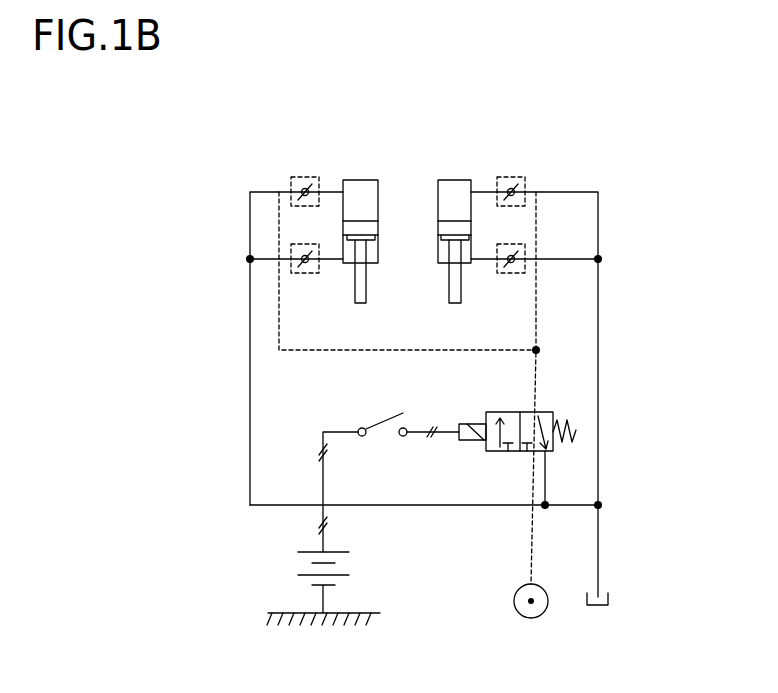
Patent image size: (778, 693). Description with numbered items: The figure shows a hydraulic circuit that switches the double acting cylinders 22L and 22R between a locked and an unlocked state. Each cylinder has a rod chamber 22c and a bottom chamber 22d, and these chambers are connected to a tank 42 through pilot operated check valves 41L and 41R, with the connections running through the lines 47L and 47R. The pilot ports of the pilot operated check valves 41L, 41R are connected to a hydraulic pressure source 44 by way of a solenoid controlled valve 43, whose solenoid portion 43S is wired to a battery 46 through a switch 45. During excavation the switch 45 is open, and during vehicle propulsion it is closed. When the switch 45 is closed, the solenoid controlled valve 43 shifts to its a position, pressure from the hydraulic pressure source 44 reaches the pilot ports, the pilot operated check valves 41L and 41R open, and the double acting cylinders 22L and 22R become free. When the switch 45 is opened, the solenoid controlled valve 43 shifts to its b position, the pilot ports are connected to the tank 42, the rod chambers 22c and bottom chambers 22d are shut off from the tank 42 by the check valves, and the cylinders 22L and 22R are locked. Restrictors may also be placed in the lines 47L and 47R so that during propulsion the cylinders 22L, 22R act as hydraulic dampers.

The double acting cylinder 22R is at (355, 180).
The double acting cylinder 22L is at (457, 180).
The bottom chamber 22d is at (447, 218).
The rod chamber 22c is at (447, 248).
The pilot operated check valve 41R is at (315, 180).
The pilot operated check valve 41L is at (515, 178).
The line 47R is at (257, 256).
The line 47L is at (568, 259).
The solenoid controlled valve 43 is at (545, 412).
The solenoid portion 43S is at (462, 441).
The switch 45 is at (377, 420).
The battery 46 is at (293, 563).
The hydraulic pressure source 44 is at (512, 600).
The tank 42 is at (608, 600).